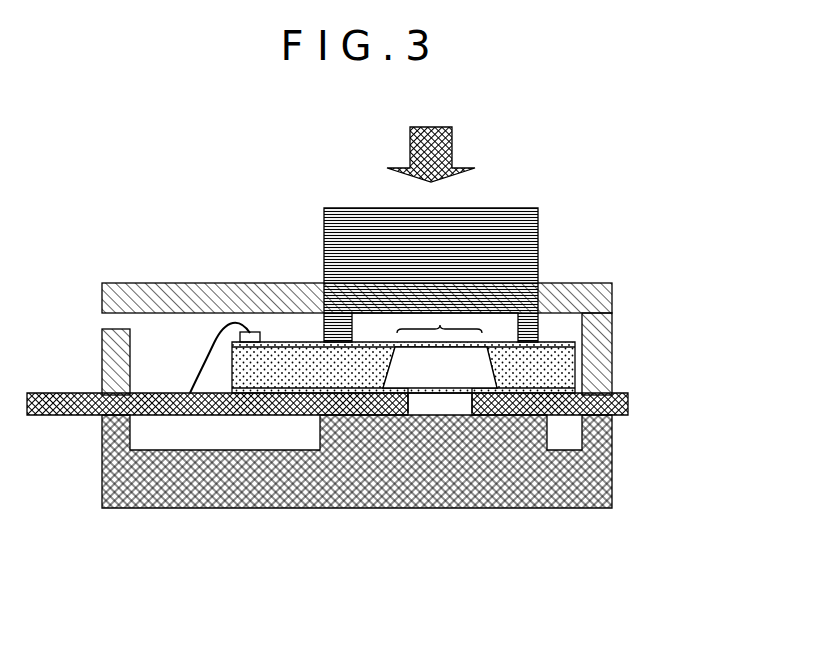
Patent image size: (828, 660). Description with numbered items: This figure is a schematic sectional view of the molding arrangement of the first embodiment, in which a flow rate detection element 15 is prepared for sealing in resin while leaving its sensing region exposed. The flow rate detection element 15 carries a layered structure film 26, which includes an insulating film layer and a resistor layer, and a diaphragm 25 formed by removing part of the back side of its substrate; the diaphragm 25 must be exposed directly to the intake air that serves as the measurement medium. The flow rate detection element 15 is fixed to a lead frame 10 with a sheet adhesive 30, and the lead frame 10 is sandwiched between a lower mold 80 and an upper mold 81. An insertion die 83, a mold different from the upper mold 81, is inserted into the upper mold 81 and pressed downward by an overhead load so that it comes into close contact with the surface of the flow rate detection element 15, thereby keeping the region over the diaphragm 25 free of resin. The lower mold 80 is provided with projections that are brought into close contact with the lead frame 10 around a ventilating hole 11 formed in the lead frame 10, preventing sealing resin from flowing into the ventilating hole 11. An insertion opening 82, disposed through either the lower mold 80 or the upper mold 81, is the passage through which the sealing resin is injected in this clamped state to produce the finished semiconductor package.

The lead frame 10 is at (598, 398).
The ventilating hole 11 is at (443, 405).
The flow rate detection element 15 is at (231, 363).
The diaphragm 25 is at (441, 324).
The layered structure film 26 is at (362, 340).
The sheet adhesive 30 is at (323, 387).
The lower mold 80 is at (557, 475).
The upper mold 81 is at (118, 283).
The insertion opening 82 is at (108, 321).
The insertion die 83 is at (514, 210).